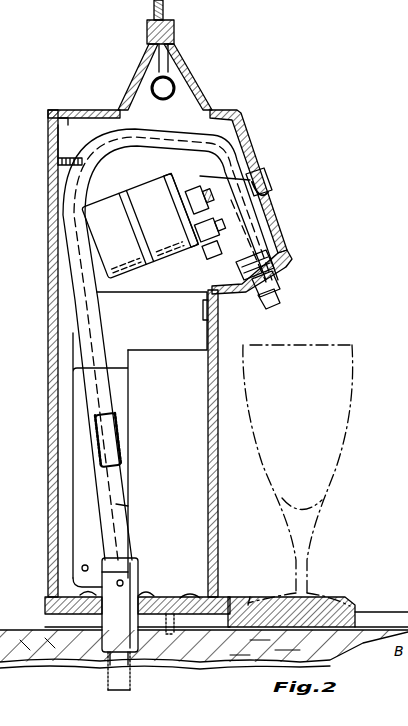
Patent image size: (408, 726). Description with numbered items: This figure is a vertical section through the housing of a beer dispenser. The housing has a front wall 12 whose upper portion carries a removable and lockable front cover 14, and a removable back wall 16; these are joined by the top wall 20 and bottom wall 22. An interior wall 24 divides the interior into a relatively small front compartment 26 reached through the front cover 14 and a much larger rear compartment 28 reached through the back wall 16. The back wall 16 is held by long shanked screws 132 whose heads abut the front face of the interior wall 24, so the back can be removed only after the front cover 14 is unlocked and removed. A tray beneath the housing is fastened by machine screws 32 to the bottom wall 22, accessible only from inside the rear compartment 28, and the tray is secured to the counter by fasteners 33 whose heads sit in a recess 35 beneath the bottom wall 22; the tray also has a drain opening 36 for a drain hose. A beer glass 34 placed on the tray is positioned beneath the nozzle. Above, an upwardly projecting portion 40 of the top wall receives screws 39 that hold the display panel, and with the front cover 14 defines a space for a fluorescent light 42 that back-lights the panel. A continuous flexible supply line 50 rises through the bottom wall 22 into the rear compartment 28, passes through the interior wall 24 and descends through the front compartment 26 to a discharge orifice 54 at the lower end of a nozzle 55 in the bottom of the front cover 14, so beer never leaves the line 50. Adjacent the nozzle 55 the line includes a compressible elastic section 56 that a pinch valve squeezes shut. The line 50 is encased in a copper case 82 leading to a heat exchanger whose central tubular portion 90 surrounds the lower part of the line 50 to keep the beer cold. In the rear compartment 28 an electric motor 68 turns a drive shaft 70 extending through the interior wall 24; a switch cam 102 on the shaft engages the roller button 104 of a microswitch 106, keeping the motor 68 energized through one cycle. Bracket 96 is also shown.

The front wall 12 is at (222, 490).
The front cover 14 is at (250, 134).
The back wall 16 is at (50, 356).
The top wall 20 is at (90, 110).
The bottom wall 22 is at (150, 597).
The interior wall 24 is at (150, 175).
The front compartment 26 is at (262, 232).
The rear compartment 28 is at (72, 310).
The machine screws 32 is at (196, 592).
The fasteners 33 is at (168, 600).
The beer glass 34 is at (332, 476).
The recess 35 is at (140, 572).
The drain opening 36 is at (243, 600).
The screws 39 is at (176, 46).
The upwardly projecting portion of the top wall 40 is at (147, 58).
The fluorescent light 42 is at (175, 76).
The supply line 50 is at (120, 450).
The discharge orifice 54 is at (242, 327).
The nozzle 55 is at (278, 290).
The compressible line section 56 is at (270, 198).
The electric motor 68 is at (95, 225).
The drive shaft 70 is at (185, 190).
The copper case 82 is at (124, 508).
The central tubular portion 90 is at (104, 680).
The support bracket 96 is at (150, 348).
The switch cam 102 is at (190, 205).
The roller button 104 is at (196, 226).
The microswitch 106 is at (216, 262).
The long shanked screws 132 is at (98, 133).